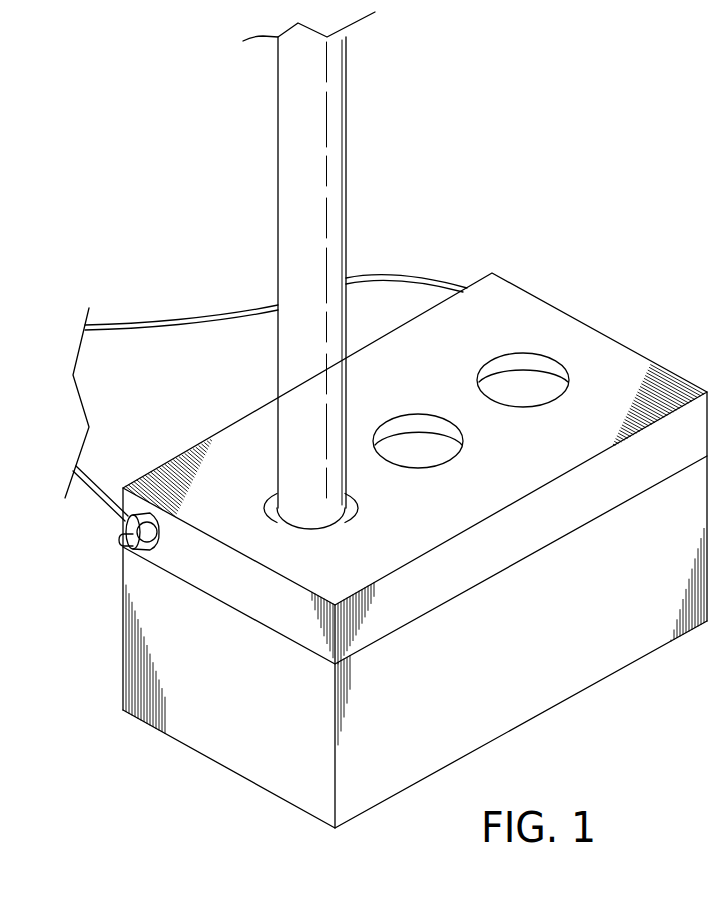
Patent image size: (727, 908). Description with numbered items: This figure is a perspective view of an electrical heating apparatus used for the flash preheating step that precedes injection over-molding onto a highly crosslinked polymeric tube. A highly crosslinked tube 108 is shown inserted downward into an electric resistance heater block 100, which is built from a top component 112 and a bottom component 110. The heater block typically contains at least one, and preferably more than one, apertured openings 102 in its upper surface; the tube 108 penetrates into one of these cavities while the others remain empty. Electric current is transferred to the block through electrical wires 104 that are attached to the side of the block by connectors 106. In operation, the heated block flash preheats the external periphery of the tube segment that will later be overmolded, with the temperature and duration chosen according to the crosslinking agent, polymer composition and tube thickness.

The electric resistance heater block 100 is at (415, 534).
The apertured openings 102 is at (518, 407).
The electrical wires 104 is at (393, 273).
The connectors 106 is at (121, 530).
The highly crosslinked tube 108 is at (347, 98).
The bottom component 110 is at (563, 630).
The top component 112 is at (444, 520).